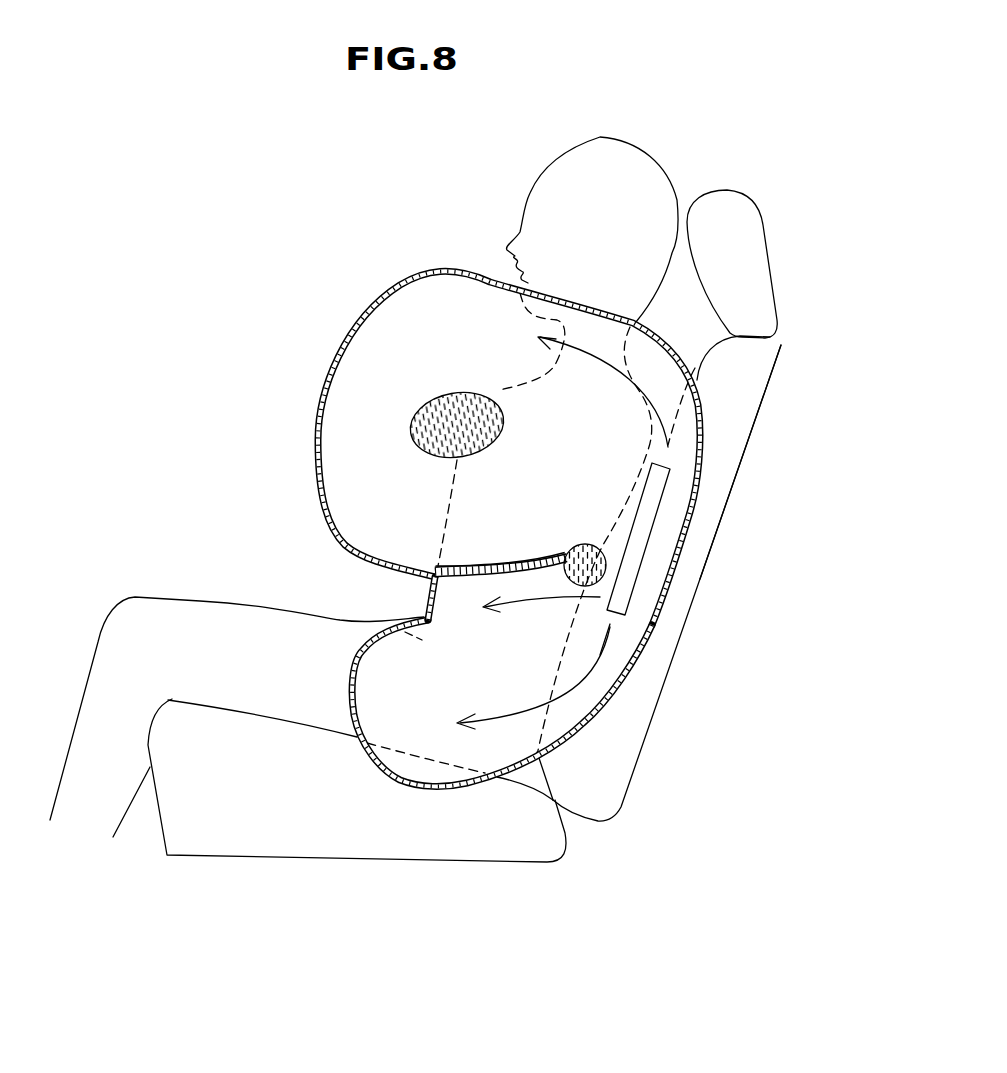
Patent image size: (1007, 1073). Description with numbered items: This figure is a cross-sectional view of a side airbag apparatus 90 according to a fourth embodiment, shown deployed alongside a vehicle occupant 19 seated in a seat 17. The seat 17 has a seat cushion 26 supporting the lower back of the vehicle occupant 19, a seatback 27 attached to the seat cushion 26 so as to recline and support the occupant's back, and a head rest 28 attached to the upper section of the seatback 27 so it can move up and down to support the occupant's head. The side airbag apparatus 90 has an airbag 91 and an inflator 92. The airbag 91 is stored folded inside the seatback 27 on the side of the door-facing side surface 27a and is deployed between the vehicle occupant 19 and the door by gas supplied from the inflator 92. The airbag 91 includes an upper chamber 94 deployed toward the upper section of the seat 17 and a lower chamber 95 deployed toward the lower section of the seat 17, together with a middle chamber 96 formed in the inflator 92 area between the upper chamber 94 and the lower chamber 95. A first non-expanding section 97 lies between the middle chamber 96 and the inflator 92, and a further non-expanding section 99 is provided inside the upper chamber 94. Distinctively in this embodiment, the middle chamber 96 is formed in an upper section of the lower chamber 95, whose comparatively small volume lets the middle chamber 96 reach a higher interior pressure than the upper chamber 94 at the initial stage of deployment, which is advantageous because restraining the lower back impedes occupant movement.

The seat 17 is at (748, 170).
The vehicle occupant 19 is at (615, 137).
The seat cushion 26 is at (230, 833).
The seatback 27 is at (742, 396).
The door-facing side surface 27a is at (743, 420).
The head rest 28 is at (755, 237).
The side airbag apparatus 90 is at (457, 448).
The airbag 91 is at (412, 528).
The inflator 92 is at (664, 492).
The upper chamber 94 is at (347, 480).
The lower chamber 95 is at (420, 673).
The middle chamber 96 is at (425, 618).
The first non-expanding section 97 is at (606, 565).
The non-expanding section 99 is at (442, 408).